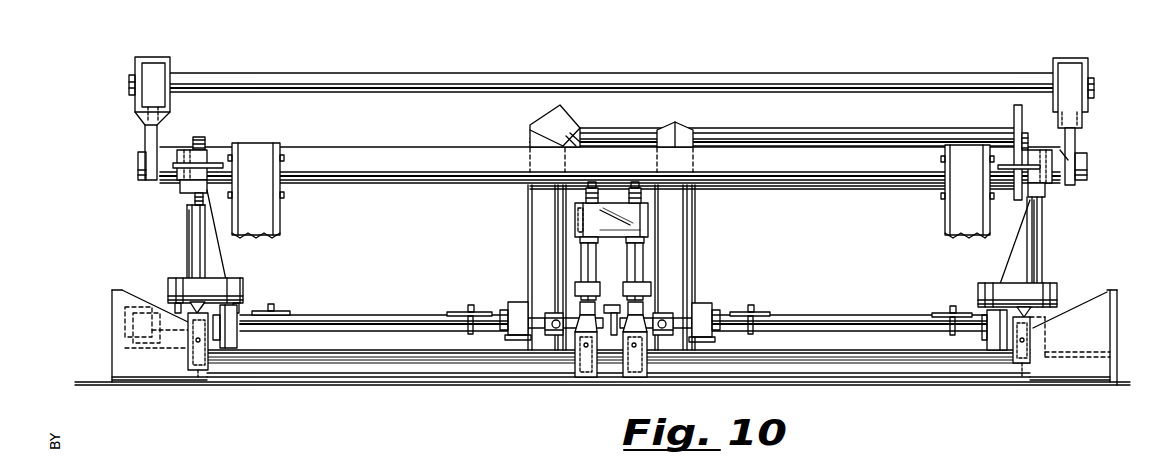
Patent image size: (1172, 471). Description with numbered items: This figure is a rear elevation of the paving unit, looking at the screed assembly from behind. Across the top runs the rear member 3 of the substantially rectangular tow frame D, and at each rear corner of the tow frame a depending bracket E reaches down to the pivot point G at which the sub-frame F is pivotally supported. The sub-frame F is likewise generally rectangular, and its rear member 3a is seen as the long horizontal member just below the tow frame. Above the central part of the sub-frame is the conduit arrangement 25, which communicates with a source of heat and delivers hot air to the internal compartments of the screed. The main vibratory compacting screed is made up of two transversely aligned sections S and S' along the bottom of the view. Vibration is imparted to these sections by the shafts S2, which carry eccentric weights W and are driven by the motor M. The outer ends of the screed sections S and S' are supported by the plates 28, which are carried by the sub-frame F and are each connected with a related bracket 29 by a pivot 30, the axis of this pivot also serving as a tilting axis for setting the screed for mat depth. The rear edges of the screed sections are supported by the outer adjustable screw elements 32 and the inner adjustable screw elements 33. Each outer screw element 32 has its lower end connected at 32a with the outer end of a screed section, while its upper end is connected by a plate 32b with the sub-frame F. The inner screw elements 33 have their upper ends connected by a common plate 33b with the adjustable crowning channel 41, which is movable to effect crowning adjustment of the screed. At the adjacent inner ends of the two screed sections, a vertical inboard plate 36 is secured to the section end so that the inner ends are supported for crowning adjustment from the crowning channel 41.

The rear member 3 is at (397, 76).
The rear member 3a is at (380, 153).
The conduit arrangement 25 is at (766, 119).
The plates 28 is at (186, 264).
The bracket 29 is at (210, 309).
The pivot 30 is at (244, 290).
The outer adjustable screw elements 32 is at (190, 234).
The lower end connection of outer screw element 32a is at (183, 350).
The plates 32b is at (187, 150).
The inner adjustable screw elements 33 is at (582, 262).
The common plate 33b is at (611, 205).
The vertical inboard plate 36 is at (610, 345).
The adjustable crowning channel 41 is at (576, 229).
The tow frame D is at (152, 76).
The depending brackets E is at (148, 140).
The sub-frame F is at (763, 189).
The pivot points G is at (138, 168).
The motor M is at (128, 291).
The screed section S is at (398, 382).
The screed section S' is at (810, 382).
The shafts S2 is at (357, 320).
The eccentric weights W is at (287, 311).